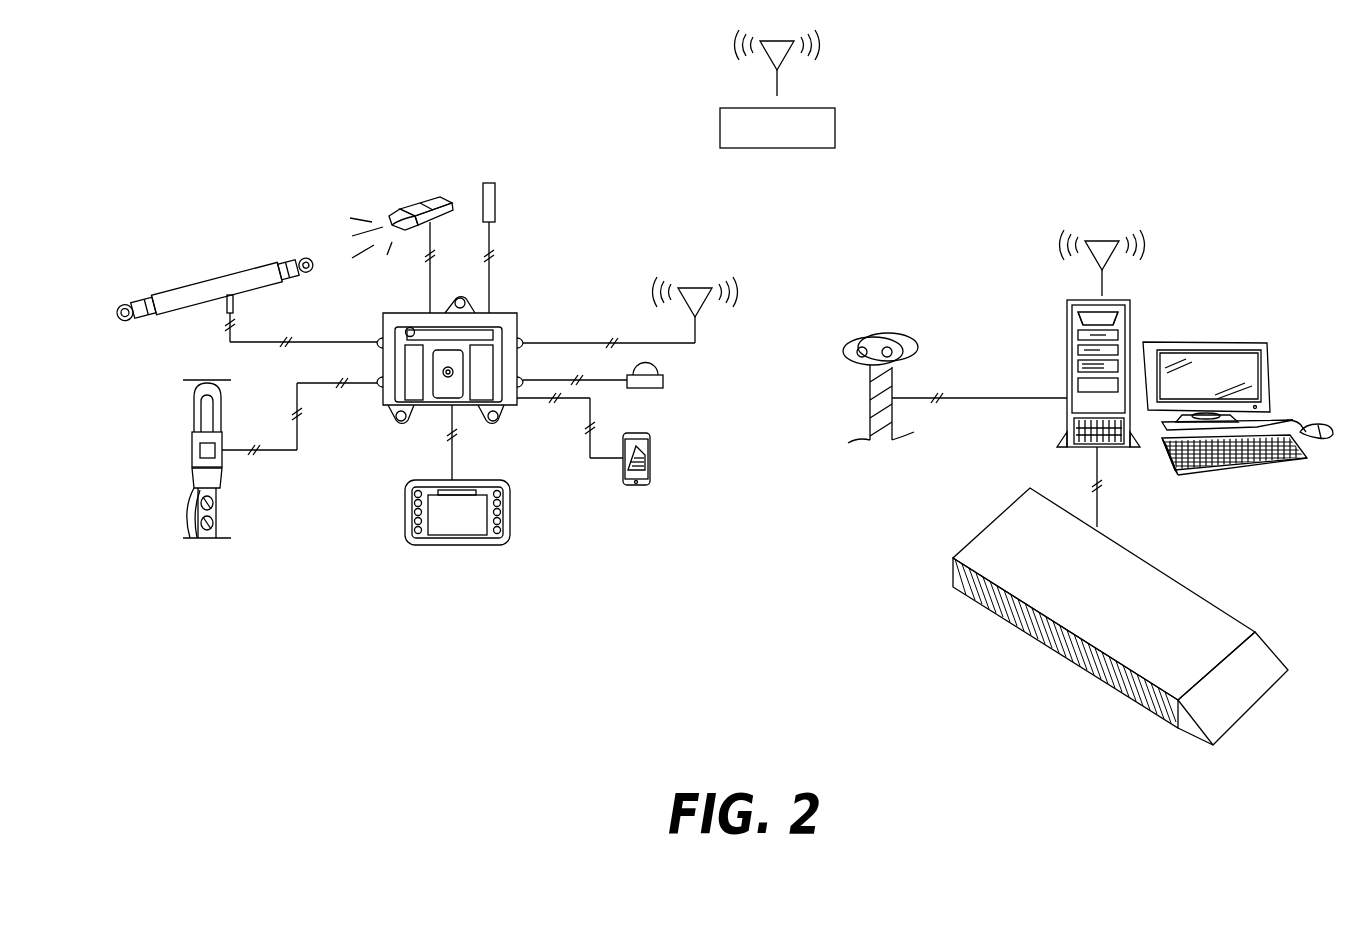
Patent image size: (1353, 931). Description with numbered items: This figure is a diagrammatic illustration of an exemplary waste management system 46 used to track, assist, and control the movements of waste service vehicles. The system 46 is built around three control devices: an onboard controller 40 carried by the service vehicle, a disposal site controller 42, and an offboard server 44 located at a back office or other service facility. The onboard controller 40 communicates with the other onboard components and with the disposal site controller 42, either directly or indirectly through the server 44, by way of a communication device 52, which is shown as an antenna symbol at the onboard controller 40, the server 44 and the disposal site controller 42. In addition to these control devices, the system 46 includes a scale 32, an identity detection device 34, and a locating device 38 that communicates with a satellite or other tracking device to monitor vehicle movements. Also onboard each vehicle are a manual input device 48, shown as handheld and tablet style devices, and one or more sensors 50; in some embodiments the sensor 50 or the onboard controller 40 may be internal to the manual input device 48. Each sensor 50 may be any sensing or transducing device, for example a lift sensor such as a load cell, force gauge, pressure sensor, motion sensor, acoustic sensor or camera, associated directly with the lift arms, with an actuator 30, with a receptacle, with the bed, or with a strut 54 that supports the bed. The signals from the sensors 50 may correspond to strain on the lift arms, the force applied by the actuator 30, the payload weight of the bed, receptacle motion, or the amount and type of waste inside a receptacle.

The actuator 30 is at (192, 292).
The scale 32 is at (1040, 647).
The identity detection device 34 is at (920, 345).
The locating device 38 is at (663, 383).
The onboard controller 40 is at (533, 315).
The disposal site controller 42 is at (1130, 337).
The server 44 is at (835, 125).
The waste management system 46 is at (778, 559).
The manual input device 48 is at (510, 507).
The sensor 50 is at (422, 208).
The communication device 52 is at (697, 332).
The strut 54 is at (222, 473).